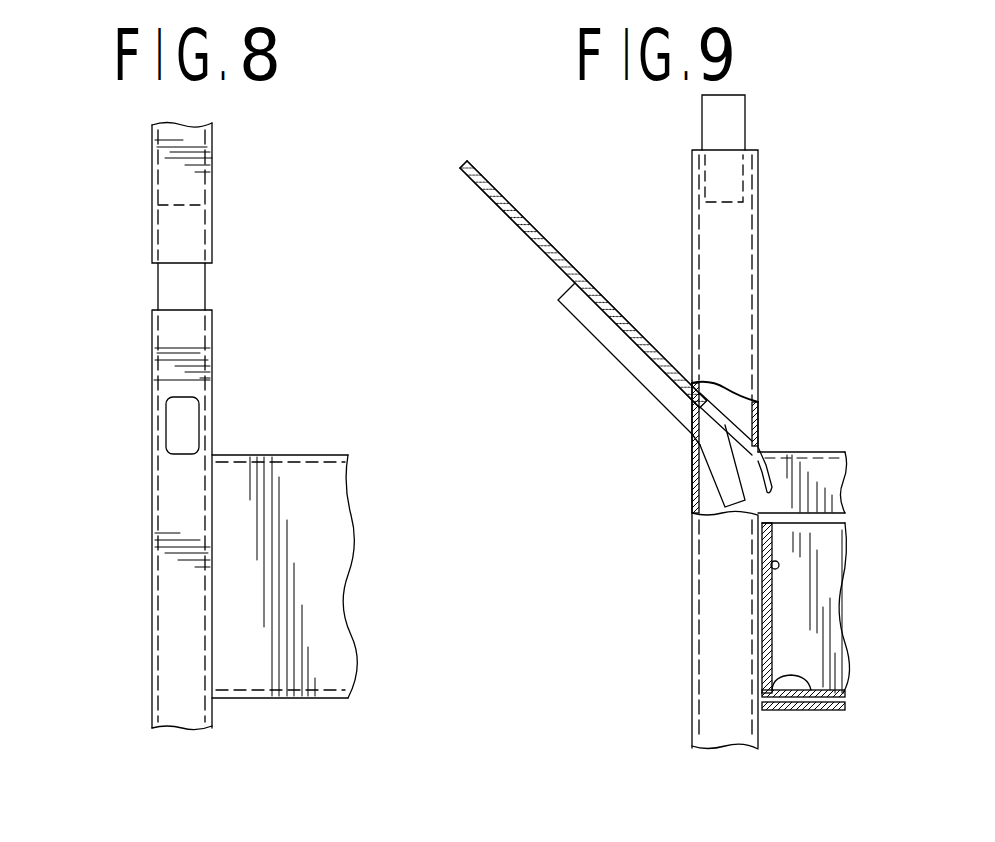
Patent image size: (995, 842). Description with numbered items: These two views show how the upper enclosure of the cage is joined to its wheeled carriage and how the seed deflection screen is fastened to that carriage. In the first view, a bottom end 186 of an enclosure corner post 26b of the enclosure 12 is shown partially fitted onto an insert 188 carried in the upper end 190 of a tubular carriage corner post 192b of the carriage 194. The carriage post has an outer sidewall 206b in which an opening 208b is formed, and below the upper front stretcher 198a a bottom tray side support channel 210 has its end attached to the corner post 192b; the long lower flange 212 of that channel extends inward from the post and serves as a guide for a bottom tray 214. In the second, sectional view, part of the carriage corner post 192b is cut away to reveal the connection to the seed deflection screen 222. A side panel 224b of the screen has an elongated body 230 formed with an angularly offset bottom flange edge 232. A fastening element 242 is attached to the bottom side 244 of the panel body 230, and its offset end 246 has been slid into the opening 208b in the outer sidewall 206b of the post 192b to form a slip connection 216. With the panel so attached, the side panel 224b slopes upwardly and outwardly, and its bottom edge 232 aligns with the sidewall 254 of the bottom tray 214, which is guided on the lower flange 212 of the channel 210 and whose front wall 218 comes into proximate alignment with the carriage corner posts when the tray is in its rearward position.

In FIG. 8, the enclosure 12 is at (197, 123).
In FIG. 8, the enclosure corner post 26b is at (152, 198).
In FIG. 8, the bottom end 186 is at (212, 205).
In FIG. 8, the insert 188 is at (158, 287).
In FIG. 9, the insert 188 is at (745, 130).
In FIG. 8, the upper end 190 is at (152, 340).
In FIG. 9, the upper end 190 is at (740, 237).
In FIG. 8, the carriage corner post 192b is at (190, 350).
In FIG. 9, the carriage corner post 192b is at (690, 586).
In FIG. 8, the carriage 194 is at (157, 563).
In FIG. 9, the carriage 194 is at (760, 375).
In FIG. 9, the upper front stretcher 198a is at (825, 488).
In FIG. 8, the outer sidewall 206b is at (183, 383).
In FIG. 9, the outer sidewall 206b is at (690, 254).
In FIG. 8, the opening 208b is at (182, 427).
In FIG. 9, the opening 208b is at (692, 448).
In FIG. 8, the bottom tray side support channel 210 is at (333, 578).
In FIG. 9, the bottom tray side support channel 210 is at (780, 712).
In FIG. 8, the lower flange 212 is at (322, 692).
In FIG. 9, the lower flange 212 is at (776, 680).
In FIG. 9, the bottom tray 214 is at (830, 604).
In FIG. 9, the slip connection 216 is at (713, 435).
In FIG. 9, the front wall 218 is at (825, 646).
In FIG. 9, the seed deflection screen 222 is at (540, 247).
In FIG. 9, the side panel 224b is at (523, 225).
In FIG. 9, the elongated body 230 is at (508, 198).
In FIG. 9, the bottom flange edge 232 is at (778, 485).
In FIG. 9, the fastening element 242 is at (592, 337).
In FIG. 9, the bottom side 244 is at (483, 192).
In FIG. 9, the offset end 246 is at (733, 482).
In FIG. 9, the sidewall 254 is at (772, 567).